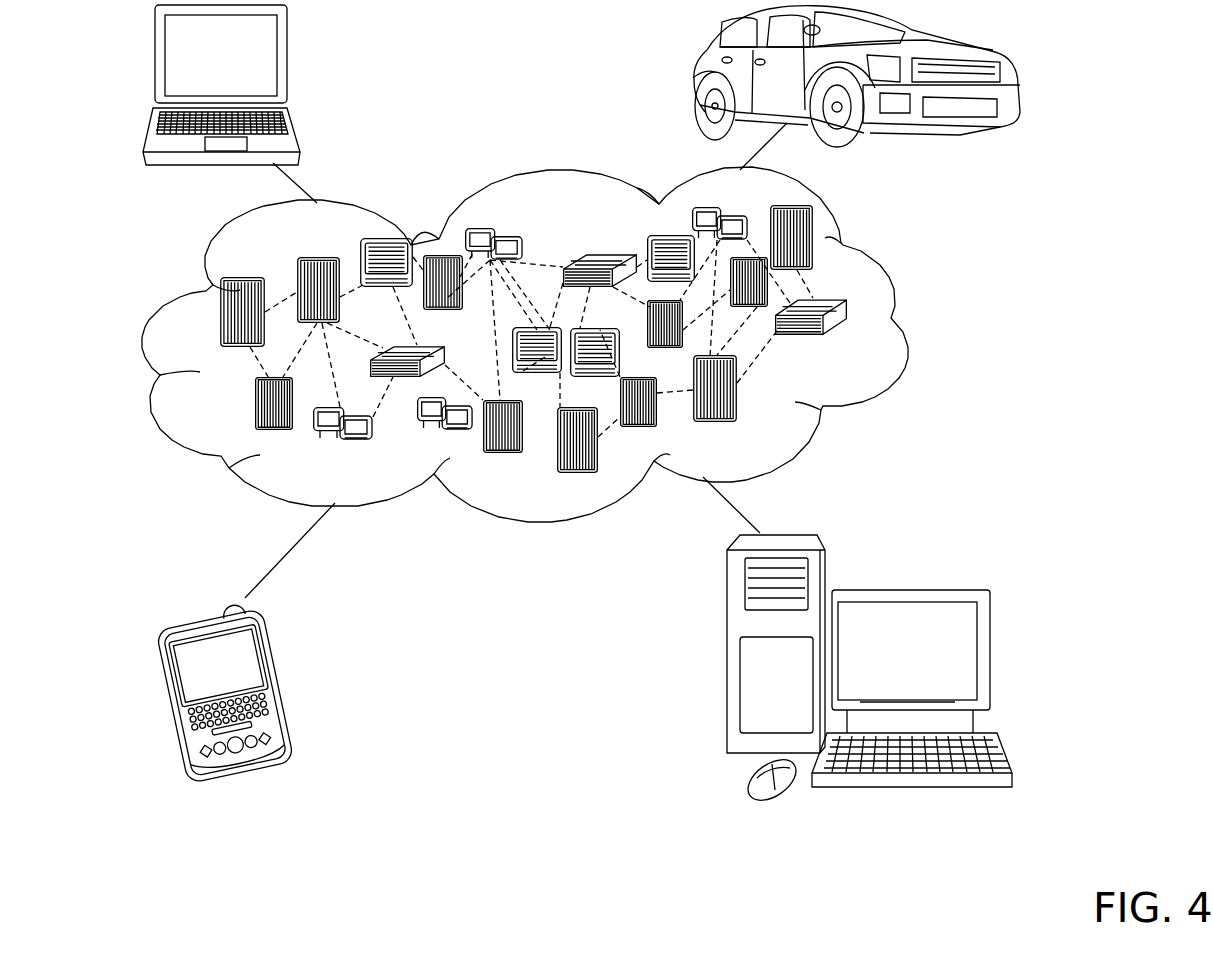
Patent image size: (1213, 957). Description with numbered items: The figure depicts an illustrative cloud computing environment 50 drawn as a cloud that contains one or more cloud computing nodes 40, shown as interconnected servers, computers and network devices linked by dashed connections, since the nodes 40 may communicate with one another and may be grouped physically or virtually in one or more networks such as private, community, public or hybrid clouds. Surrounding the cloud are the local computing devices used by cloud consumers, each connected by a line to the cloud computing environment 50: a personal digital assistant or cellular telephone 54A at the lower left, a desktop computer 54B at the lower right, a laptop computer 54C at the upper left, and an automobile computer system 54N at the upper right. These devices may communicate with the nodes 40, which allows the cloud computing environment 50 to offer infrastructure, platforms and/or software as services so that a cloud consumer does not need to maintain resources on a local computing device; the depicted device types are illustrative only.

The cloud computing nodes 40 is at (909, 369).
The cloud computing environment 50 is at (906, 318).
The personal digital assistant or cellular telephone 54A is at (283, 680).
The desktop computer 54B is at (905, 590).
The laptop computer 54C is at (287, 62).
The automobile computer system 54N is at (700, 72).